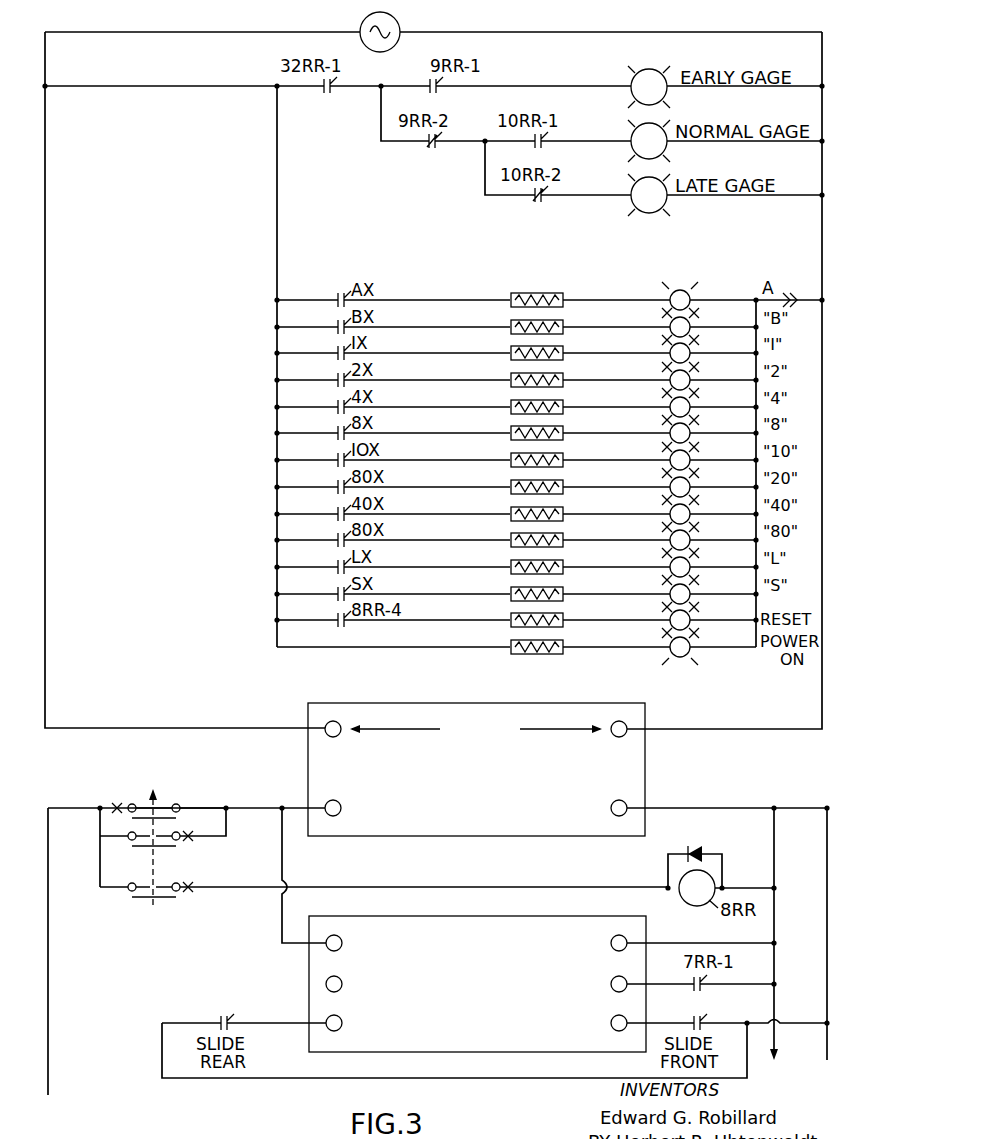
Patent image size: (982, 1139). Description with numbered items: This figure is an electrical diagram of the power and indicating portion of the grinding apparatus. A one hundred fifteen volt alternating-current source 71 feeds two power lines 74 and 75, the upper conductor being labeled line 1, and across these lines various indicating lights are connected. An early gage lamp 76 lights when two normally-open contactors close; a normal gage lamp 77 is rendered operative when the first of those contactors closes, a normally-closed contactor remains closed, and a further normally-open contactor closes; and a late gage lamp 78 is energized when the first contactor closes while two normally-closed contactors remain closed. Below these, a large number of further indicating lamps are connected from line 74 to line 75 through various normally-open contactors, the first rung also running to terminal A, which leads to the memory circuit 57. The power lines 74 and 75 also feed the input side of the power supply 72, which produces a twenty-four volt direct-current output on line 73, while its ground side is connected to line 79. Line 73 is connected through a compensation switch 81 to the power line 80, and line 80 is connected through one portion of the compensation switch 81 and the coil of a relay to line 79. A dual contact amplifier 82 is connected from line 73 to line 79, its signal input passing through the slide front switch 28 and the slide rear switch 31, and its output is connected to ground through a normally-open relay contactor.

The 115 volt A.C. source 71 is at (395, 25).
The supply line conductor 1 is at (161, 100).
The power line 74 is at (47, 238).
The power line 75 is at (822, 237).
The early gage lamp 76 is at (660, 92).
The normal gage lamp 77 is at (660, 146).
The late gage lamp 78 is at (660, 200).
The memory circuit 57 is at (790, 292).
The power supply 72 is at (398, 703).
The line 73 is at (290, 797).
The compensation switch 81 is at (140, 850).
The power line 80 is at (48, 970).
The dual contact amplifier 82 is at (309, 970).
The slide front switch 28 is at (221, 1018).
The slide rear switch 31 is at (704, 1019).
The line 79 is at (827, 939).